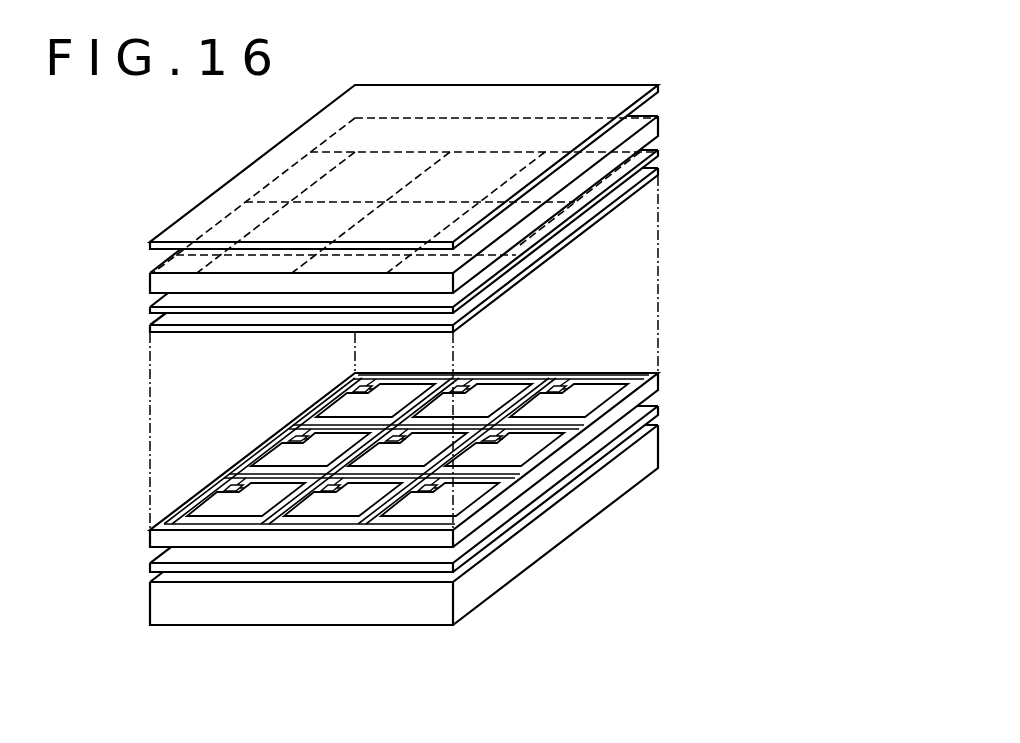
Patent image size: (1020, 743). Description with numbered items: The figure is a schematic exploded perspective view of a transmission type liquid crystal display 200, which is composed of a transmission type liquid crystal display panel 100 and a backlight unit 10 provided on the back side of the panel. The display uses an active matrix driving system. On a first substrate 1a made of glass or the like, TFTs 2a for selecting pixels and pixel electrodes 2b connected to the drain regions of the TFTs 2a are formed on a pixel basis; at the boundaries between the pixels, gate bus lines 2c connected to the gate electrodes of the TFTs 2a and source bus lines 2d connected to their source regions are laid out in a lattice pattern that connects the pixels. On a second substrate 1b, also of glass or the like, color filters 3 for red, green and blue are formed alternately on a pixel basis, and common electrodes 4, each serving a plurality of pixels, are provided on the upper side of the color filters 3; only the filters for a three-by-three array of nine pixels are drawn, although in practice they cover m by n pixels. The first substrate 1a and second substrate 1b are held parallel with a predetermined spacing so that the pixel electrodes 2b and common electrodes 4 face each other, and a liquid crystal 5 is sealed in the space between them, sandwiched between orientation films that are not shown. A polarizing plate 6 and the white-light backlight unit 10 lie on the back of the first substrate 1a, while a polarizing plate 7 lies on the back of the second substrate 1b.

The transmission type liquid crystal display 200 is at (163, 153).
The transmission type liquid crystal display panel 100 is at (764, 75).
The polarizing plate 7 is at (658, 88).
The second substrate 1b is at (658, 122).
The color filters 3 is at (658, 153).
The common electrodes 4 is at (658, 175).
The liquid crystal 5 is at (622, 257).
The TFTs 2a is at (572, 358).
The pixel electrodes 2b is at (603, 382).
The first substrate 1a is at (451, 488).
The polarizing plate 6 is at (638, 415).
The backlight unit 10 is at (505, 560).
The gate bus lines 2c is at (502, 477).
The source bus lines 2d is at (292, 500).